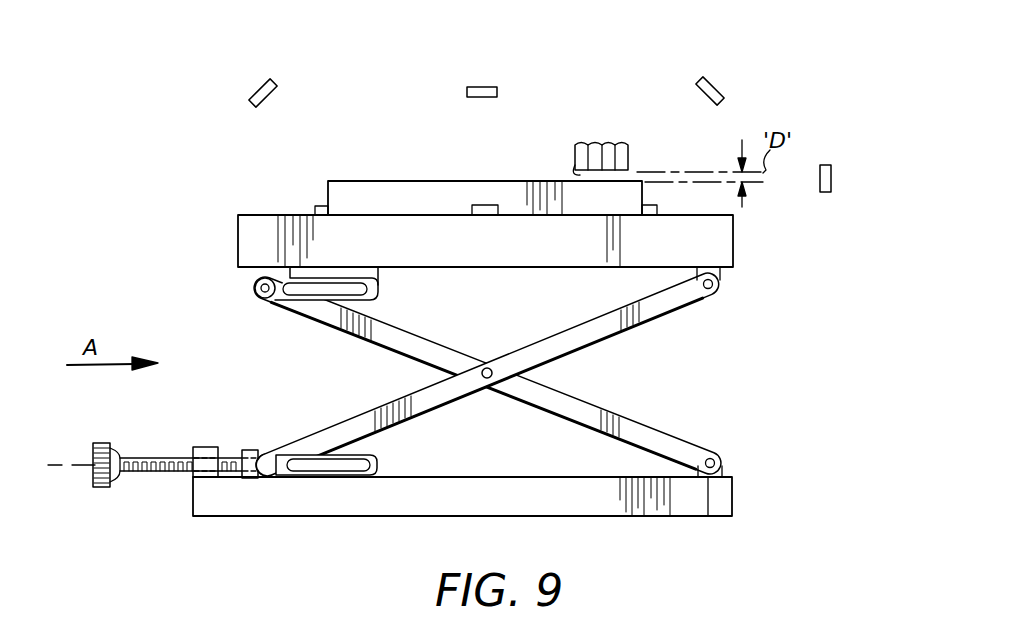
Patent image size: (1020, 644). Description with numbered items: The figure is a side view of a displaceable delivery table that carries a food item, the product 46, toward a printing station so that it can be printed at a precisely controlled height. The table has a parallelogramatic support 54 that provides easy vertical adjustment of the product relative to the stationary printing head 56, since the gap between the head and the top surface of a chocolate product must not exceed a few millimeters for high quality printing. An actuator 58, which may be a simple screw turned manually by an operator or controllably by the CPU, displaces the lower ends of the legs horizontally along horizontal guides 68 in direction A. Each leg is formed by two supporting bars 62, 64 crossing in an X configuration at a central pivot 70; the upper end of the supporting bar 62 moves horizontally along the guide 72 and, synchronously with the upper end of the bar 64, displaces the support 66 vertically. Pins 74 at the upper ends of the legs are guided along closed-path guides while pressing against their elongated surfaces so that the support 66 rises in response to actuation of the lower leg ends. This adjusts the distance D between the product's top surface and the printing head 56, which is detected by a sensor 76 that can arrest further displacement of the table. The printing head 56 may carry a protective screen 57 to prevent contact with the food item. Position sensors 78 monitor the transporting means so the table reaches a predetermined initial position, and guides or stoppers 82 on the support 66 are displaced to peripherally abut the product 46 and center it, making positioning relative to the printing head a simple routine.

The product 46 is at (345, 195).
The parallelogramatic support 54 is at (675, 368).
The printing head 56 is at (624, 157).
The protective screen 57 is at (578, 174).
The actuator 58 is at (258, 180).
The supporting bar 62 is at (443, 357).
The supporting bar 64 is at (585, 333).
The support 66 is at (262, 250).
The horizontal guides 68 is at (342, 476).
The center pivot 70 is at (487, 367).
The guide 72 is at (327, 285).
The pins 74 is at (262, 297).
The sensor 76 is at (830, 165).
The position sensors 78 is at (275, 85).
The guides or stoppers 82 is at (320, 217).